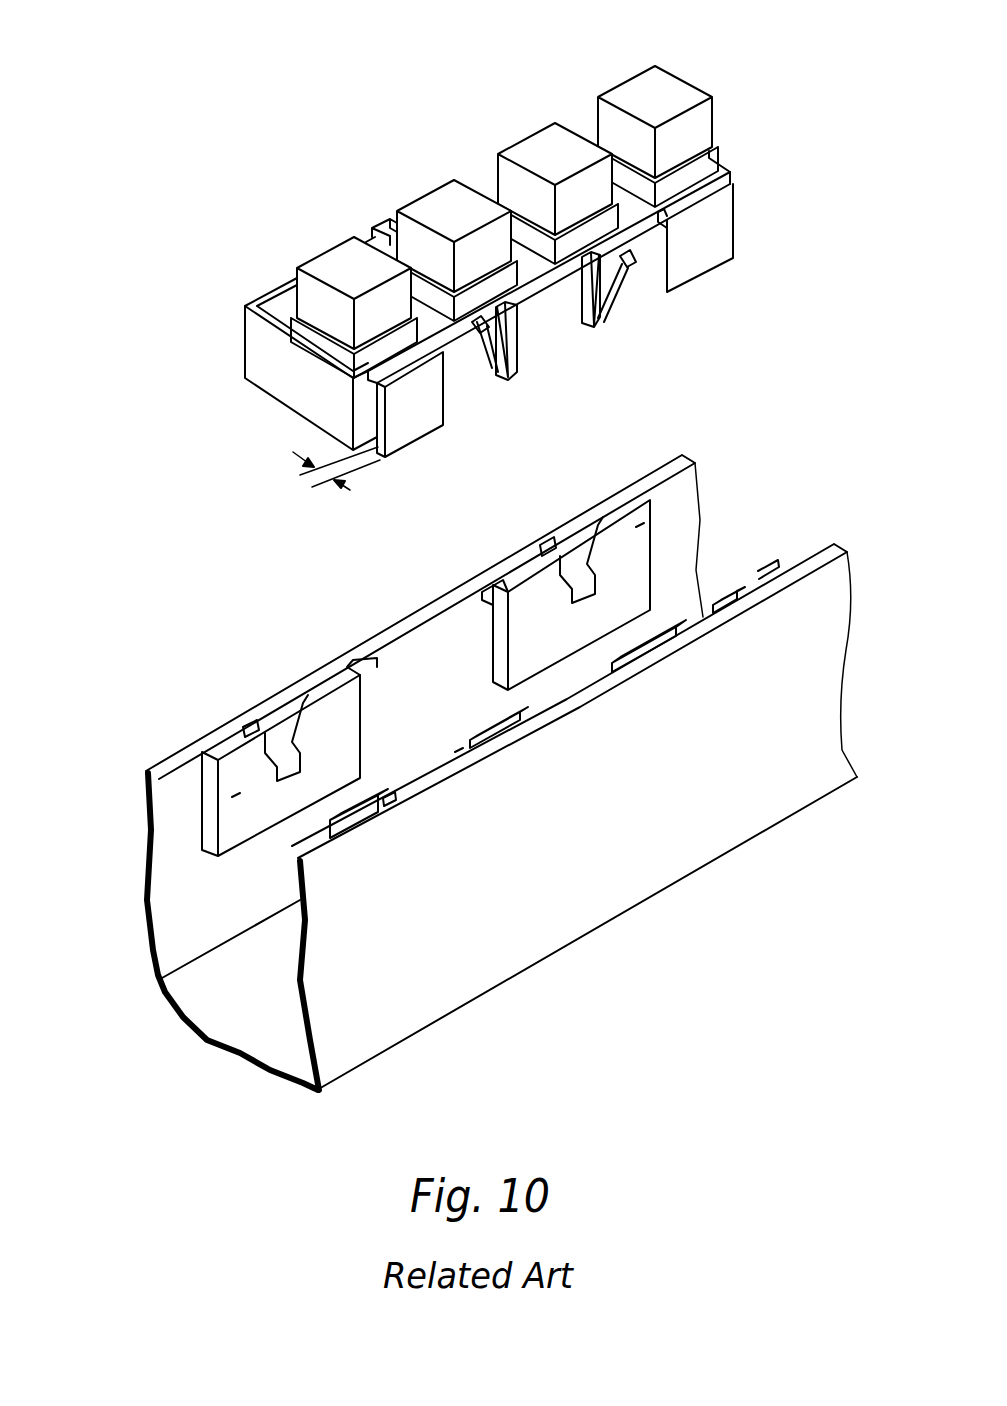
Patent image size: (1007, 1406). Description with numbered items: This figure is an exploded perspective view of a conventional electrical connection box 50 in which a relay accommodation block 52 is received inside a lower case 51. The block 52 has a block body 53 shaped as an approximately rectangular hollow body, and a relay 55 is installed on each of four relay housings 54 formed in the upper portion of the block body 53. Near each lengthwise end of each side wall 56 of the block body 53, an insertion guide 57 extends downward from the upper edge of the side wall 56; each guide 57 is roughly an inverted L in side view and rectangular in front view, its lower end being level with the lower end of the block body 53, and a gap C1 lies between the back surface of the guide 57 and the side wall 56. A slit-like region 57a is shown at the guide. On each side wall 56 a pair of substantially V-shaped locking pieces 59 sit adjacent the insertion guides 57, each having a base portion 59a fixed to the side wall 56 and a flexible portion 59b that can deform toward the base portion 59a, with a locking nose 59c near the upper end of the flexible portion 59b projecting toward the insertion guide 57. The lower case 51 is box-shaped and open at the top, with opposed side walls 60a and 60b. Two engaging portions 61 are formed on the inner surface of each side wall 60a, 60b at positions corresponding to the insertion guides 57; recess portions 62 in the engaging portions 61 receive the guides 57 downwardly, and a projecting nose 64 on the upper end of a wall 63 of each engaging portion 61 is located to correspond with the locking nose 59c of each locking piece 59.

The electrical connection box 50 is at (722, 72).
The lower case 51 is at (828, 490).
The relay accommodation block 52 is at (757, 194).
The block body 53 is at (727, 153).
The relay housing 54 is at (678, 176).
The relay 55 is at (643, 87).
The side wall 56 is at (547, 327).
The insertion guide 57 is at (243, 347).
The slit in leg tab 57a is at (661, 222).
The locking piece 59 is at (598, 333).
The base portion 59a is at (590, 400).
The flexible portion 59b is at (490, 368).
The locking nose 59c is at (472, 335).
The side wall 60a is at (575, 910).
The side wall 60b is at (172, 853).
The engaging portion 61 is at (640, 525).
The recess portion 62 is at (540, 556).
The wall 63 is at (500, 623).
The projecting nose 64 is at (483, 587).
The gap C1 is at (336, 476).